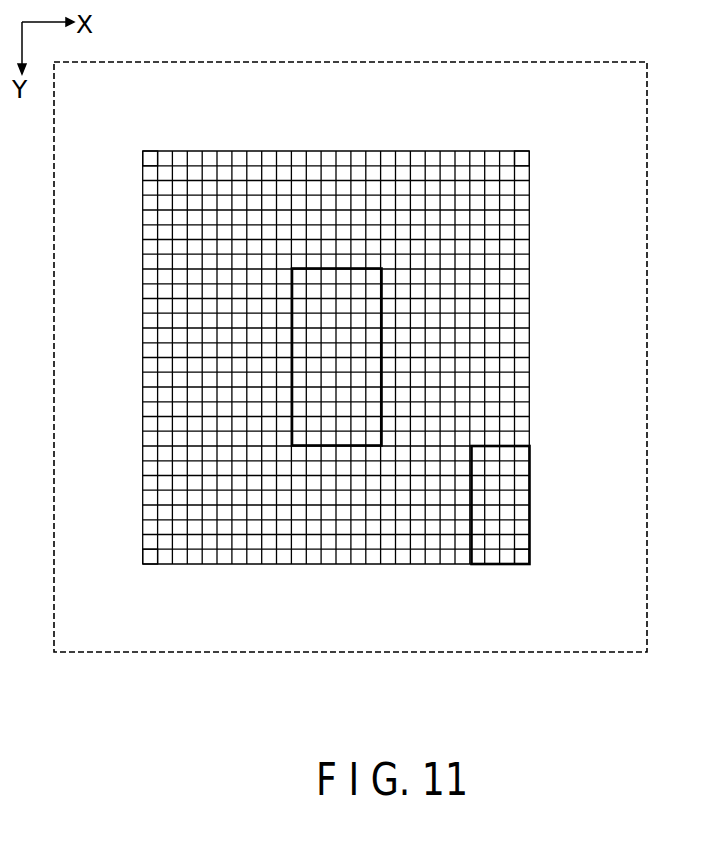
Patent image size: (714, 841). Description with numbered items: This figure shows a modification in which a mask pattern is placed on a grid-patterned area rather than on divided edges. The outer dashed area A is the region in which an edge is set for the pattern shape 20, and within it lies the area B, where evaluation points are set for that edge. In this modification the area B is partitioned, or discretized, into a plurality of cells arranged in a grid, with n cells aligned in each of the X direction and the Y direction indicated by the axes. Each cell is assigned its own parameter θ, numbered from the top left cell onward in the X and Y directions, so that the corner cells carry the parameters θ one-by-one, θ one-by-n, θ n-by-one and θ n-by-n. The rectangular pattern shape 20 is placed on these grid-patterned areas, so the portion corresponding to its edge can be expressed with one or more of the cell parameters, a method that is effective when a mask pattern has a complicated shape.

The area A is at (575, 62).
The area B is at (478, 152).
The pattern shape 20 is at (348, 446).